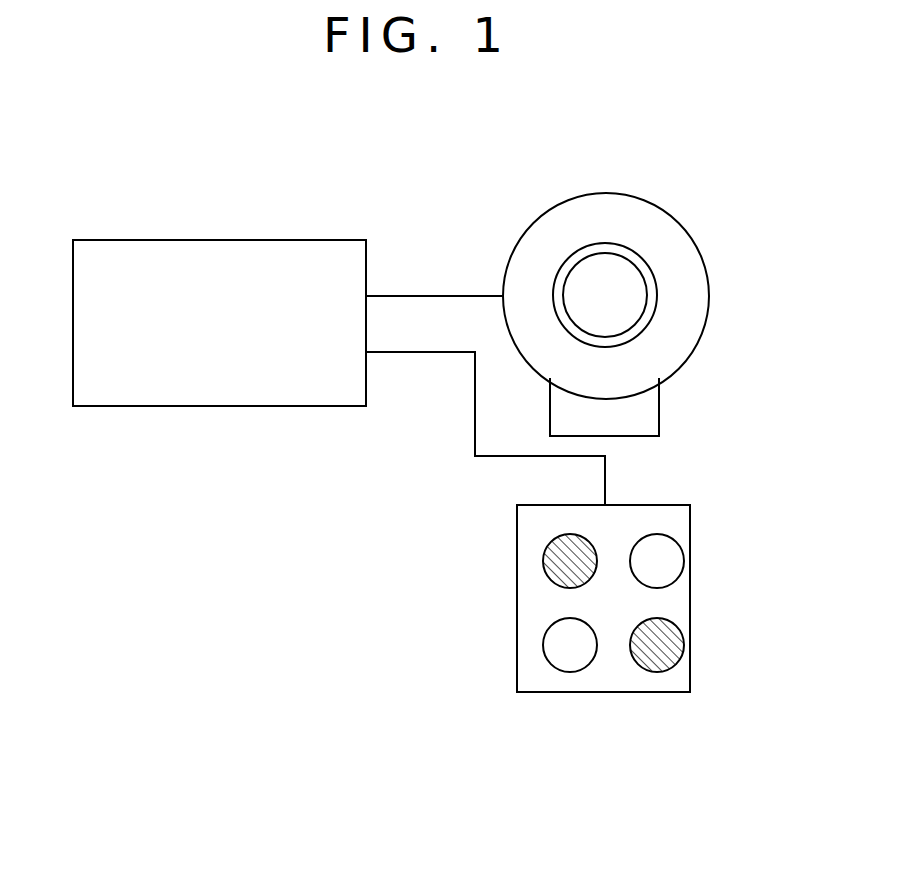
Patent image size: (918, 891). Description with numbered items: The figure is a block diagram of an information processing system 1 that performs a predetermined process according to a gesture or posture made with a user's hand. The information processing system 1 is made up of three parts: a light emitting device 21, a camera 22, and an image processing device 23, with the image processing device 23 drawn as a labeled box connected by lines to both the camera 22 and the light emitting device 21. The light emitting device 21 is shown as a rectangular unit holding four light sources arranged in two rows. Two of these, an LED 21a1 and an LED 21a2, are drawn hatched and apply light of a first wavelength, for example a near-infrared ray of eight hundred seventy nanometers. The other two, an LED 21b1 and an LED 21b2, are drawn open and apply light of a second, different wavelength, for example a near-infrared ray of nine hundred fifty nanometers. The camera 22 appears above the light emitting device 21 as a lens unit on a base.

The information processing system 1 is at (288, 613).
The light emitting device 21 is at (612, 692).
The LED 21a1 is at (543, 563).
The LED 21a2 is at (655, 672).
The LED 21b1 is at (562, 672).
The LED 21b2 is at (685, 561).
The camera 22 is at (603, 194).
The image processing device 23 is at (232, 240).